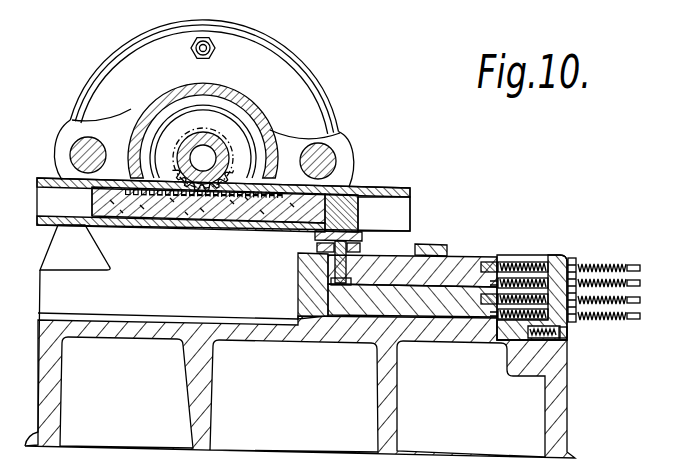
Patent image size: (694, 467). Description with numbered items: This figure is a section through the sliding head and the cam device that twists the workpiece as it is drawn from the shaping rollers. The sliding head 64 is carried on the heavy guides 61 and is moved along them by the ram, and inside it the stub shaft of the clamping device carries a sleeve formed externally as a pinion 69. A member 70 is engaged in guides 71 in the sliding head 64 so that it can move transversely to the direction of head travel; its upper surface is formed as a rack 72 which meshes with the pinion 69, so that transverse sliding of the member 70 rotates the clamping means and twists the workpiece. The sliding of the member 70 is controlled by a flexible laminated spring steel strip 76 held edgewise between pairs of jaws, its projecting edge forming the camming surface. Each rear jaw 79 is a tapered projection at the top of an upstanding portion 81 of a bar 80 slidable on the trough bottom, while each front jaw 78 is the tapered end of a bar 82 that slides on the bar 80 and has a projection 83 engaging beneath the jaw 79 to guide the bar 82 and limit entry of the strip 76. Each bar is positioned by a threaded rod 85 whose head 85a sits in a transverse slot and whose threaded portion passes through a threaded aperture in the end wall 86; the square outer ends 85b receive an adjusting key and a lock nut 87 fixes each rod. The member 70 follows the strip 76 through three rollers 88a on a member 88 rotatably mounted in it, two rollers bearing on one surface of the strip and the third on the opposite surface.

The guides 61 is at (78, 147).
The sliding head 64 is at (232, 100).
The pinion 69 is at (233, 167).
The member 88 is at (352, 186).
The rollers 88a is at (362, 251).
The flexible laminated spring steel strip 76 is at (362, 229).
The guides 71 is at (58, 205).
The rack 72 is at (155, 212).
The member 70 is at (272, 227).
The rear jaw 79 is at (334, 252).
The front jaw 78 is at (348, 286).
The projection 83 is at (332, 282).
The bar 80 is at (433, 283).
The upstanding portion 81 is at (320, 283).
The bar 82 is at (468, 271).
The threaded rod 85 is at (519, 270).
The head 85a is at (489, 273).
The outer ends 85b is at (641, 316).
The lock nut 87 is at (586, 262).
The end wall 86 is at (568, 326).